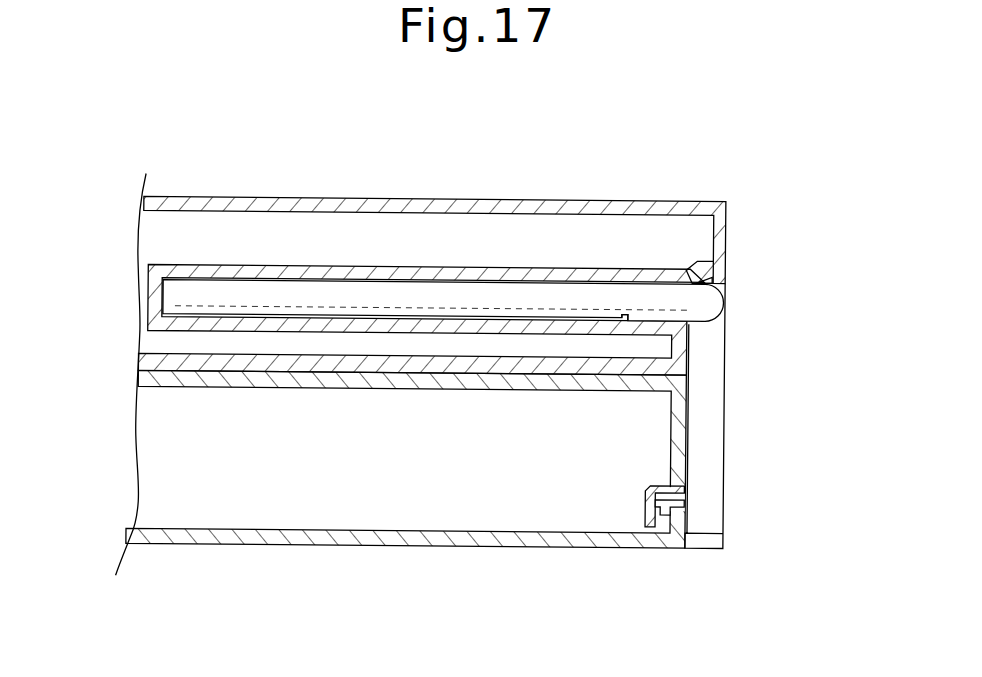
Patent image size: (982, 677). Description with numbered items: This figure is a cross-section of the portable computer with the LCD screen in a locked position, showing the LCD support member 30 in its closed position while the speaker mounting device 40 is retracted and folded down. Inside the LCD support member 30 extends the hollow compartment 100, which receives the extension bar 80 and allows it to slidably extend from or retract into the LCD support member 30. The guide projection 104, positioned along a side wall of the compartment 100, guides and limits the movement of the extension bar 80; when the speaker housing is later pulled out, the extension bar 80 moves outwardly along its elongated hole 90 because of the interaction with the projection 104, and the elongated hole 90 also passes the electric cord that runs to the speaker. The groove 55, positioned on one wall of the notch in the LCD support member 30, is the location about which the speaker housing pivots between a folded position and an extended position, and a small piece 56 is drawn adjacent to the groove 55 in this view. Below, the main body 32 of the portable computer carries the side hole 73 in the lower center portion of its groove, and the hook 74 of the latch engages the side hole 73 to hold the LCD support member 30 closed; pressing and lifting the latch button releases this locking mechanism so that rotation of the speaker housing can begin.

The LCD support member 30 is at (607, 209).
The main body 32 is at (455, 517).
The speaker mounting device 40 is at (742, 432).
The groove 55 is at (693, 272).
The stop piece 56 is at (722, 271).
The side hole 73 is at (648, 486).
The hook 74 is at (658, 503).
The extension bar 80 is at (509, 274).
The elongated hole 90 is at (168, 332).
The hollow compartment 100 is at (452, 255).
The guide projection 104 is at (625, 313).